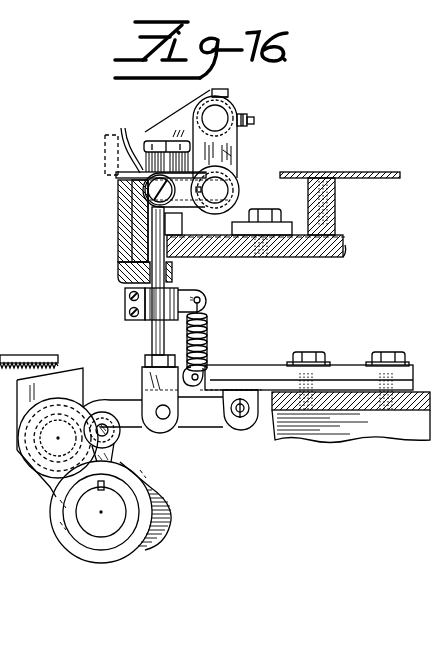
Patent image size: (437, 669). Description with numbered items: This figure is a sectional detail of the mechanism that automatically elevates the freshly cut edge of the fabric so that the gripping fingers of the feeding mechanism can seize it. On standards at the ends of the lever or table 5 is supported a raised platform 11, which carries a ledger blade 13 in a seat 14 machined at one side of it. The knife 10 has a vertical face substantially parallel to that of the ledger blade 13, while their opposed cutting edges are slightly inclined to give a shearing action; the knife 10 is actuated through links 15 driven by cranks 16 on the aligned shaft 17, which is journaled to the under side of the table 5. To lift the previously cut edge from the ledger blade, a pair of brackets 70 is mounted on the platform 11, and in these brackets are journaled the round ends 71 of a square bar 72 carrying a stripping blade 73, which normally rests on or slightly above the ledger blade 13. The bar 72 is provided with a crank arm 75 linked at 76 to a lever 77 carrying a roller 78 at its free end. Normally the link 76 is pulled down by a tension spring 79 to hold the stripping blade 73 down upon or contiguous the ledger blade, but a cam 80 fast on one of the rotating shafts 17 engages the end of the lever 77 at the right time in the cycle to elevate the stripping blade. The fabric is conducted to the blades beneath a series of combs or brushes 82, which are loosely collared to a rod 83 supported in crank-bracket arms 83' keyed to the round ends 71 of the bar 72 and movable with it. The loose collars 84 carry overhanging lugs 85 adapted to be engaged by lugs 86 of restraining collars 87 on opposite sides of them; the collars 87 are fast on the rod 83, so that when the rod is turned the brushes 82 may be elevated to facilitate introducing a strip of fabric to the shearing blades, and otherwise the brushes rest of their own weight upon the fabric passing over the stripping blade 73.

The lever or table 5 is at (368, 413).
The knife 10 is at (107, 153).
The raised platform 11 is at (336, 257).
The ledger blade 13 is at (118, 212).
The seat 14 is at (118, 272).
The links 15 is at (80, 382).
The cranks 16 is at (47, 488).
The aligned shaft 17 is at (100, 523).
The brackets 70 is at (244, 210).
The round ends 71 is at (218, 188).
The square bar 72 is at (240, 187).
The stripping blade 73 is at (126, 132).
The crank arm 75 is at (237, 166).
The link 76 is at (157, 331).
The lever 77 is at (211, 418).
The roller 78 is at (119, 437).
The tension spring 79 is at (209, 328).
The cam 80 is at (168, 498).
The combs or brushes 82 is at (142, 134).
The rod 83 is at (230, 132).
The crank-bracket arms 83' is at (267, 134).
The loose collars 84 is at (188, 108).
The overhanging lugs 85 is at (226, 96).
The lugs 86 is at (227, 79).
The restraining collars 87 is at (247, 108).